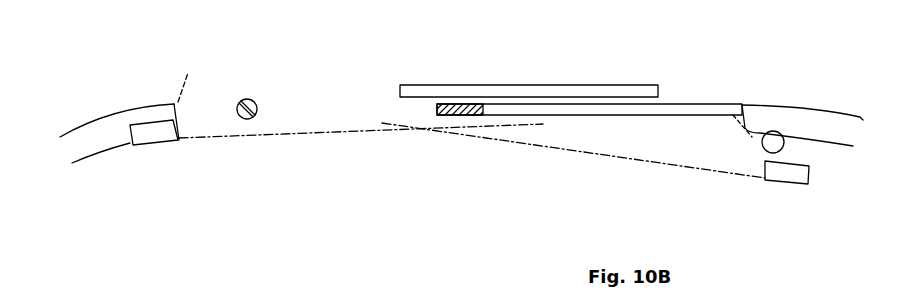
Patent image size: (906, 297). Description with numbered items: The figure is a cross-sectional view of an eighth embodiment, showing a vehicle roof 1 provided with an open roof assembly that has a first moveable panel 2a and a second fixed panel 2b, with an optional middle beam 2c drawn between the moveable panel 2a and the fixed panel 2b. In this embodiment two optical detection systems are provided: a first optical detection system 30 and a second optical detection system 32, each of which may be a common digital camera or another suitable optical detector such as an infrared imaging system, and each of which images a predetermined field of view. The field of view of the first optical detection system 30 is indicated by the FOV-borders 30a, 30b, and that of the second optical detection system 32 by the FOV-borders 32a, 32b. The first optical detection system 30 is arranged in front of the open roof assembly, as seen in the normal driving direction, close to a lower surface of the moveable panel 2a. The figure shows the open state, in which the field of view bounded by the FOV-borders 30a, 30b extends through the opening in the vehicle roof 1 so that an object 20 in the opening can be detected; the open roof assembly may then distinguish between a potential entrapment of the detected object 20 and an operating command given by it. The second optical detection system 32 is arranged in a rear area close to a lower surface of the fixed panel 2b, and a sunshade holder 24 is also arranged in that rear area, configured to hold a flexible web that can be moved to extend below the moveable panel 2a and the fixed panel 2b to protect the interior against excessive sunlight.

The vehicle roof 1 is at (107, 132).
The first moveable panel 2a is at (420, 88).
The second fixed panel 2b is at (527, 112).
The middle beam 2c is at (457, 116).
The object 20 is at (247, 98).
The sunshade holder 24 is at (763, 147).
The first optical detection system 30 is at (168, 133).
The FOV-border 30a is at (247, 137).
The FOV-border 30b is at (183, 88).
The second optical detection system 32 is at (792, 173).
The FOV-border 32a is at (598, 155).
The FOV-border 32b is at (752, 142).